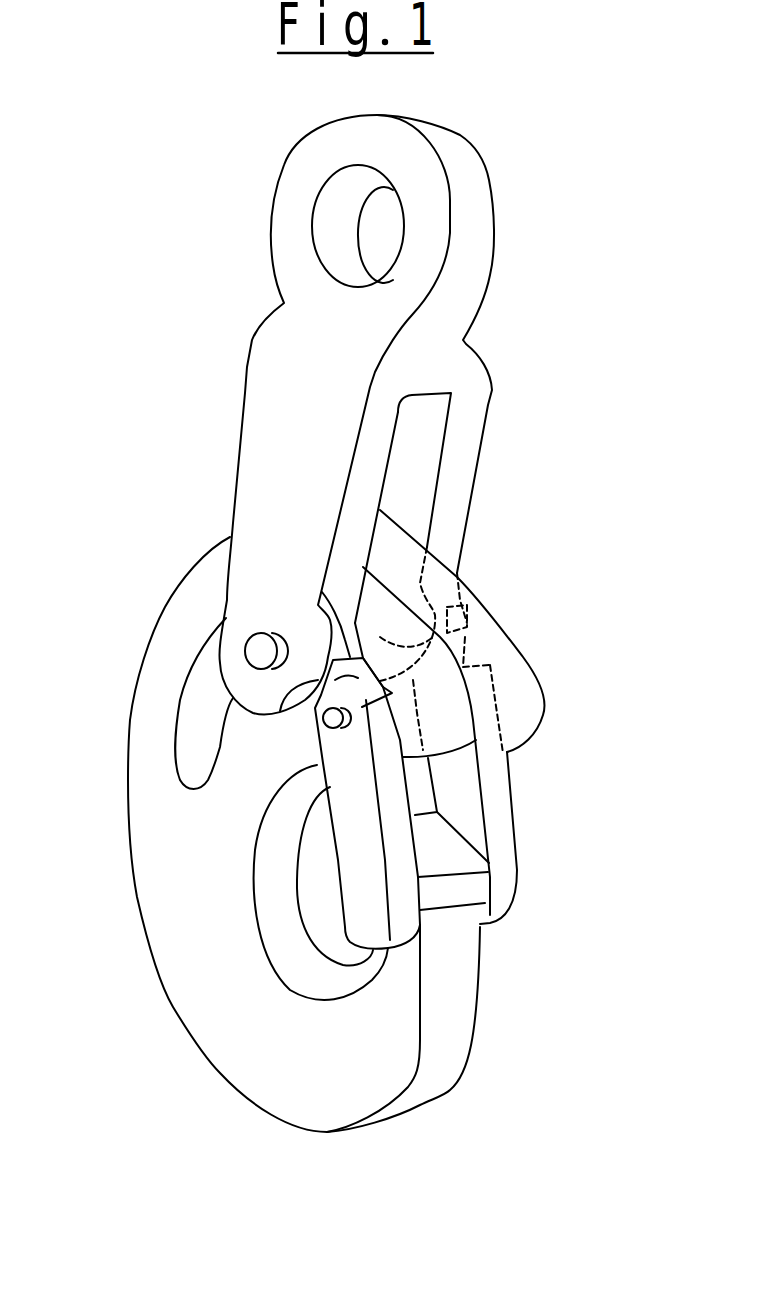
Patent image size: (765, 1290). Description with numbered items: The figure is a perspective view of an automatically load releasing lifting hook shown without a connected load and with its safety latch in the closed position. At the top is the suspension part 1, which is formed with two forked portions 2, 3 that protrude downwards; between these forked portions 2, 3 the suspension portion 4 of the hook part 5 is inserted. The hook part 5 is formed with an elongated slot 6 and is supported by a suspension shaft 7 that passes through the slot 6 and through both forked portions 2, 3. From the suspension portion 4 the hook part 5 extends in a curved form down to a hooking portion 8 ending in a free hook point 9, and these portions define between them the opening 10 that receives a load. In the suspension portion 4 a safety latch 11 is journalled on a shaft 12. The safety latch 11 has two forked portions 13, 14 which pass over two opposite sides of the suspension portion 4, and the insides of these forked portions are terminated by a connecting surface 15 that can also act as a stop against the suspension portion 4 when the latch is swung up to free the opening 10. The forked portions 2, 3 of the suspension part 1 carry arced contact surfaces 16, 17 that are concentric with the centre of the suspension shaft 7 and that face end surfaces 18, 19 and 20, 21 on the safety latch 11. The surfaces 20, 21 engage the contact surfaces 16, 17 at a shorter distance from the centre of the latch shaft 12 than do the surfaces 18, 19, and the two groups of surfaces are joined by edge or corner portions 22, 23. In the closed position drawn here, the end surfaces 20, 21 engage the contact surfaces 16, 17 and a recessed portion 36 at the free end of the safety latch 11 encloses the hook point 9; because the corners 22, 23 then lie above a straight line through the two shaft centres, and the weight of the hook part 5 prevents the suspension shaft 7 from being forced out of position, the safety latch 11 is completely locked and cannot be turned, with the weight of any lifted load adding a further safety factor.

The suspension part 1 is at (241, 346).
The forked portion 2 is at (258, 430).
The forked portion 3 is at (466, 447).
The suspension portion 4 is at (190, 602).
The hook part 5 is at (131, 896).
The elongated slot 6 is at (187, 730).
The suspension shaft 7 is at (255, 648).
The hooking portion 8 is at (253, 1048).
The hook point 9 is at (467, 930).
The opening 10 is at (283, 947).
The safety latch 11 is at (523, 863).
The shaft 12 is at (335, 737).
The forked portion 13 is at (398, 791).
The forked portion 14 is at (502, 822).
The connecting surface 15 is at (457, 857).
The arced contact surface 16 is at (355, 630).
The arced contact surface 17 is at (465, 605).
The end surface 18 is at (316, 748).
The end surface 19 is at (490, 662).
The end surface 20 is at (282, 712).
The end surface 21 is at (406, 623).
The corner portion 22 is at (318, 600).
The corner portion 23 is at (440, 640).
The recessed portion 36 is at (442, 912).